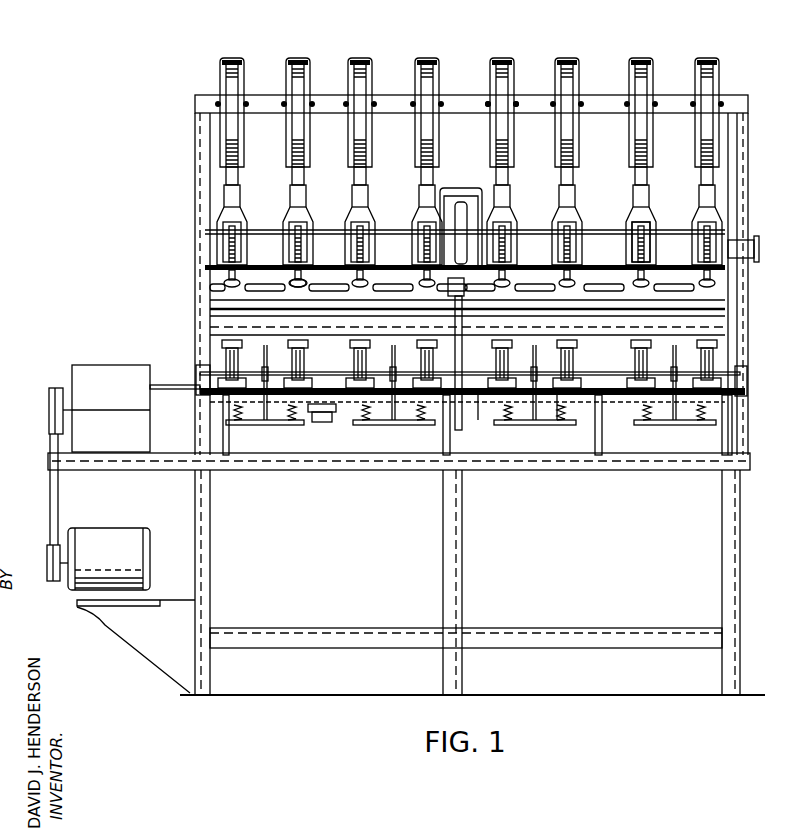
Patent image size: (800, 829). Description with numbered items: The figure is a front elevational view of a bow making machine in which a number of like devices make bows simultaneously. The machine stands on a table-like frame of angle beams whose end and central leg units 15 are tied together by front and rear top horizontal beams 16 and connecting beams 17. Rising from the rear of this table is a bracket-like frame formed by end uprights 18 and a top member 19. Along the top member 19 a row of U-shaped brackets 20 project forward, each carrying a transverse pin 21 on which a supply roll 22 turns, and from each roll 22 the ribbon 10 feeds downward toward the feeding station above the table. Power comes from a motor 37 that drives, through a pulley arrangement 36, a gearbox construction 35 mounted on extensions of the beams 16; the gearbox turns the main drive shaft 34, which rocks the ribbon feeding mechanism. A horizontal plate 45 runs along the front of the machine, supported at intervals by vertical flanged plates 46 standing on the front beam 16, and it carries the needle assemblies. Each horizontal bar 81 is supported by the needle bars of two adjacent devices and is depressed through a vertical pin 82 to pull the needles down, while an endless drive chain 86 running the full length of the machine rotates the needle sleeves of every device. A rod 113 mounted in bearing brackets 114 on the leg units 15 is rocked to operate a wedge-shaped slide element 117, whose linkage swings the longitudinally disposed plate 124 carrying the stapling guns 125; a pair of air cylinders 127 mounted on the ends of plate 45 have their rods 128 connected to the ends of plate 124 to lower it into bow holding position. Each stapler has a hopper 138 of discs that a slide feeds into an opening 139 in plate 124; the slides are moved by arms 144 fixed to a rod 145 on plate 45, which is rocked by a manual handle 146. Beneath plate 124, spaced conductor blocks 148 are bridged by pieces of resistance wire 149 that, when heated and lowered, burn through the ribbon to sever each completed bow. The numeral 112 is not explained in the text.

The ribbon 10 is at (429, 60).
The end and central leg units 15 is at (208, 556).
The front and rear top horizontal beams 16 is at (551, 468).
The connecting beams 17 is at (326, 636).
The end uprights 18 is at (205, 130).
The top member 19 is at (609, 100).
The U-shaped bracket 20 is at (514, 100).
The transverse pin 21 is at (522, 100).
The supply roll 22 is at (713, 76).
The drive shaft 34 is at (161, 391).
The gearbox construction 35 is at (80, 378).
The pulley arrangement 36 is at (50, 498).
The motor 37 is at (95, 526).
The horizontal plate 45 is at (207, 400).
The vertical flanged plates 46 is at (227, 438).
The horizontal bar 81 is at (383, 422).
The vertical pin 82 is at (429, 368).
The drive chain 86 is at (480, 405).
The lower holder 112 is at (630, 352).
The rod 113 is at (323, 372).
The bearing brackets 114 is at (203, 372).
The wedge-shaped slide element 117 is at (402, 358).
The longitudinally disposed plate 124 is at (718, 285).
The stapling guns 125 is at (640, 198).
The air cylinders 127 is at (205, 349).
The rods 128 is at (722, 321).
The hopper 138 is at (633, 236).
The opening 139 is at (426, 284).
The arm 144 is at (430, 216).
The rod 145 is at (333, 224).
The handle 146 is at (462, 193).
The conductor blocks 148 is at (328, 284).
The resistance wire 149 is at (244, 272).